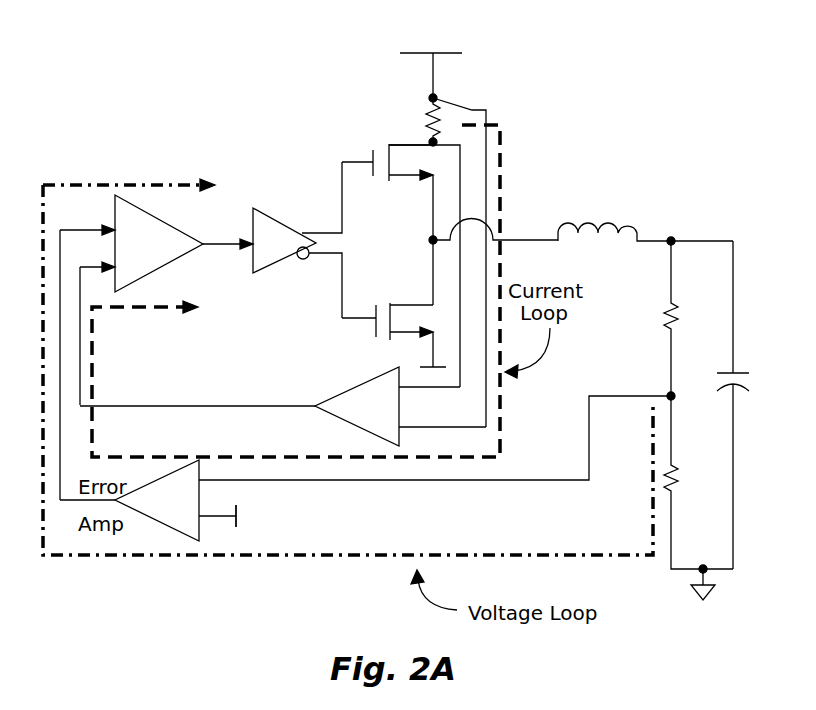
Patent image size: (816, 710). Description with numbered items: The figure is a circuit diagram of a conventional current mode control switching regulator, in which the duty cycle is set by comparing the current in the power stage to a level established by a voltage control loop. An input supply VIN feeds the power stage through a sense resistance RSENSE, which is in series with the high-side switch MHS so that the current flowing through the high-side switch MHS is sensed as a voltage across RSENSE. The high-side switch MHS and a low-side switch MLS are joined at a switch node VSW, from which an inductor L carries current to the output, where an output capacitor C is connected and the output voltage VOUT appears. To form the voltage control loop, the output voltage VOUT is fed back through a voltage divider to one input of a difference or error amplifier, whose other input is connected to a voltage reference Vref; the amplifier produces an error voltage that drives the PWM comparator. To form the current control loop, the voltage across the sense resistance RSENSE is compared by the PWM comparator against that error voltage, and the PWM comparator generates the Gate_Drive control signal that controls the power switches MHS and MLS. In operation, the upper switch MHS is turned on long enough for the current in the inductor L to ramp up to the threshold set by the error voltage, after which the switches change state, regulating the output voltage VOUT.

The input voltage VIN is at (431, 63).
The sense resistance RSENSE is at (385, 122).
The high-side switch MHS is at (387, 192).
The low-side MOSFET MLS is at (394, 303).
The switch node VSW is at (471, 235).
The PWM comparator PWM is at (156, 347).
The voltage reference Vref is at (258, 516).
The inductor L is at (645, 211).
The output voltage VOUT is at (689, 228).
The output capacitor C is at (741, 405).